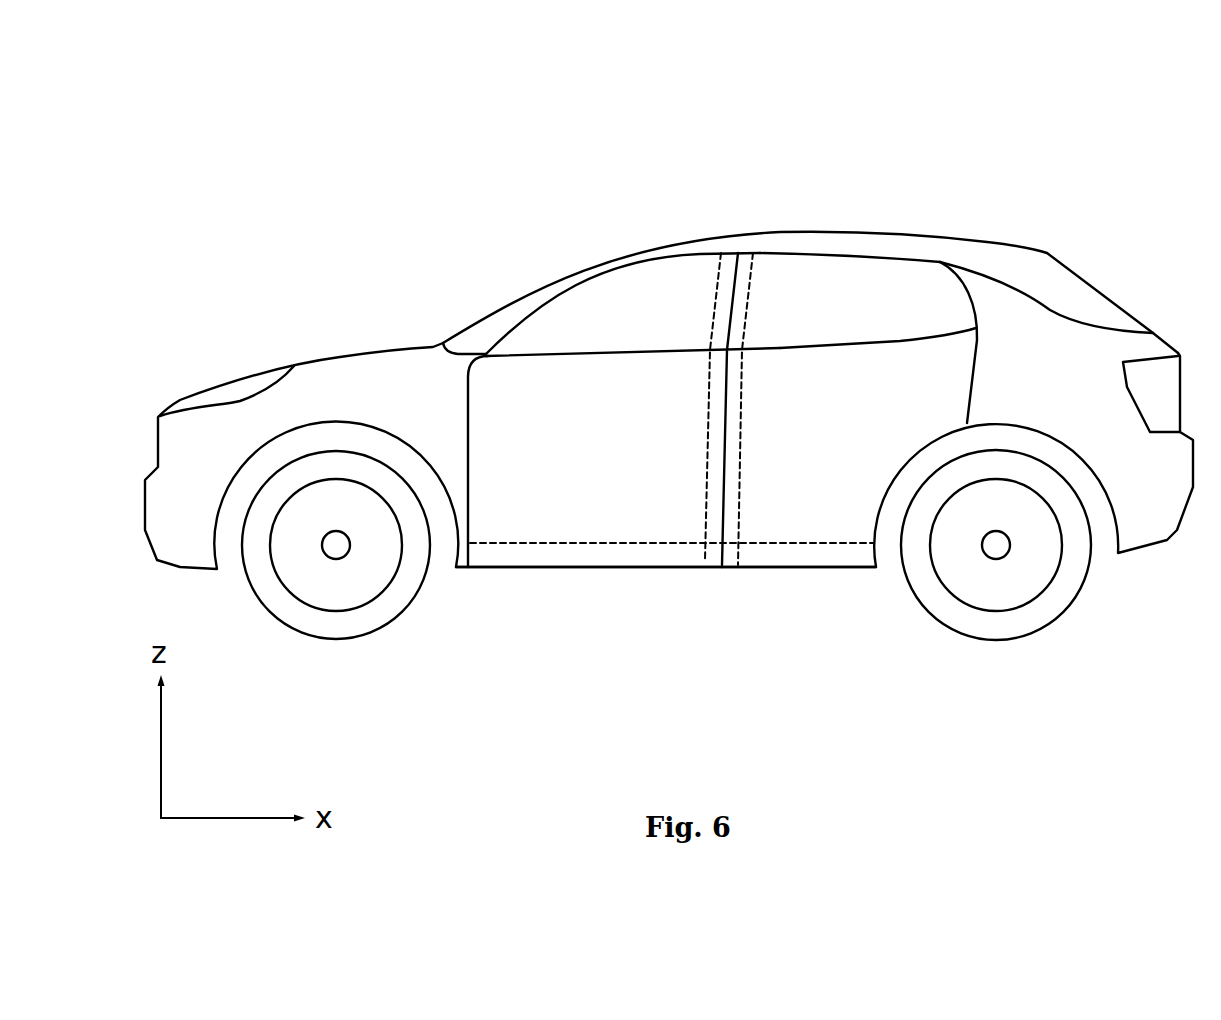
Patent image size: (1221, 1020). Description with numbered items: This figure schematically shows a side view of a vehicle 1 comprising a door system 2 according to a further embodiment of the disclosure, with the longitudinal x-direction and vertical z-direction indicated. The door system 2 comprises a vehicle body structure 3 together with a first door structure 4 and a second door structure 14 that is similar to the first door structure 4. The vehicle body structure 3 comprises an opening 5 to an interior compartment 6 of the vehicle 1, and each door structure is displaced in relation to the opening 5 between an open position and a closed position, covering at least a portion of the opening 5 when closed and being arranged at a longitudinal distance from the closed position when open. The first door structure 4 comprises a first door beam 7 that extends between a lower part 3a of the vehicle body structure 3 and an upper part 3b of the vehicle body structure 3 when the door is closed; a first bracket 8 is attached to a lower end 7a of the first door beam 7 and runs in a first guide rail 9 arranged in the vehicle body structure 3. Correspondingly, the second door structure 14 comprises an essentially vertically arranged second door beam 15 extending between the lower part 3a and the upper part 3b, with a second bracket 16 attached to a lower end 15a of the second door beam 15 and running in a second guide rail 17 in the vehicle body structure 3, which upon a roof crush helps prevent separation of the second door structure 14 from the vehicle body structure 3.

The vehicle 1 is at (432, 190).
The door system 2 is at (289, 207).
The vehicle body structure 3 is at (977, 243).
The lower part of the vehicle body structure 3a is at (700, 631).
The upper part of the vehicle body structure 3b is at (720, 198).
The first door structure 4 is at (585, 327).
The opening 5 is at (777, 321).
The interior compartment 6 is at (780, 272).
The first door beam 7 is at (717, 294).
The lower end of the first door beam 7a is at (589, 621).
The first bracket 8 is at (589, 621).
The first guide rail 9 is at (702, 552).
The second door structure 14 is at (903, 293).
The second door beam 15 is at (747, 313).
The lower end of the second door beam 15a is at (887, 643).
The second bracket 16 is at (887, 643).
The second guide rail 17 is at (738, 565).